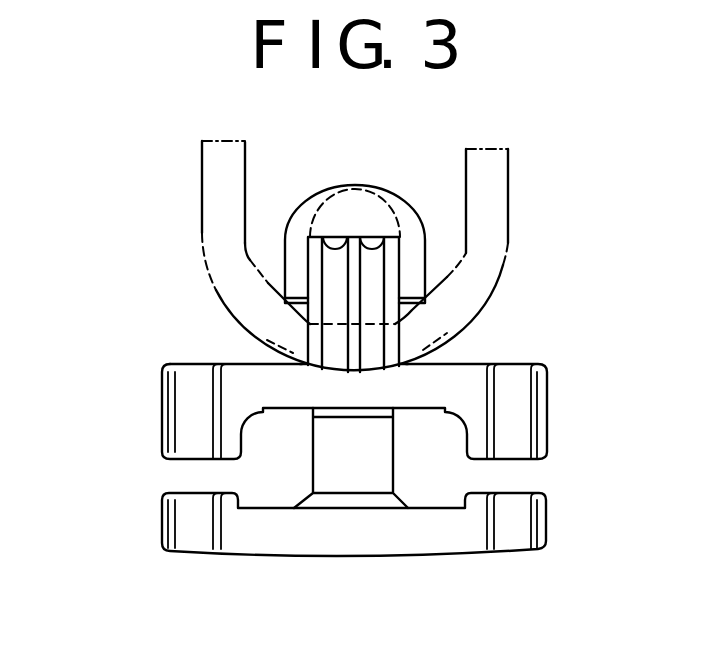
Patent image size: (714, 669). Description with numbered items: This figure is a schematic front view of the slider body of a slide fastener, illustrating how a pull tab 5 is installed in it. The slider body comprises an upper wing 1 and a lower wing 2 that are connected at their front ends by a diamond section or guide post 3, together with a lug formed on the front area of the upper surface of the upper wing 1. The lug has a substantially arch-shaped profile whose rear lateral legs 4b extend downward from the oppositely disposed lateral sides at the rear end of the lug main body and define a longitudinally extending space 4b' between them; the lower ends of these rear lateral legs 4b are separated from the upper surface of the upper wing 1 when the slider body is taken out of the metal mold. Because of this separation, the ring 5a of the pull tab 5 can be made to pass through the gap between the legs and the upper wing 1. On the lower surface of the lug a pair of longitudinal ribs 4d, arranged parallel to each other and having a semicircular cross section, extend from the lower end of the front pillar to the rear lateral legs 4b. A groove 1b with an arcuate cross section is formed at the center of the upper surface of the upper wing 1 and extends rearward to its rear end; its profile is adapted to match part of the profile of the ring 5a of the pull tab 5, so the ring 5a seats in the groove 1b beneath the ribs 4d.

The upper wing 1 is at (440, 378).
The groove 1b is at (350, 372).
The lower wing 2 is at (433, 535).
The diamond section (guide post) 3 is at (349, 480).
The rear lateral legs 4b is at (271, 244).
The space 4b' is at (273, 304).
The longitudinal ribs 4d is at (377, 237).
The pull tab 5 is at (192, 179).
The ring 5a is at (220, 207).